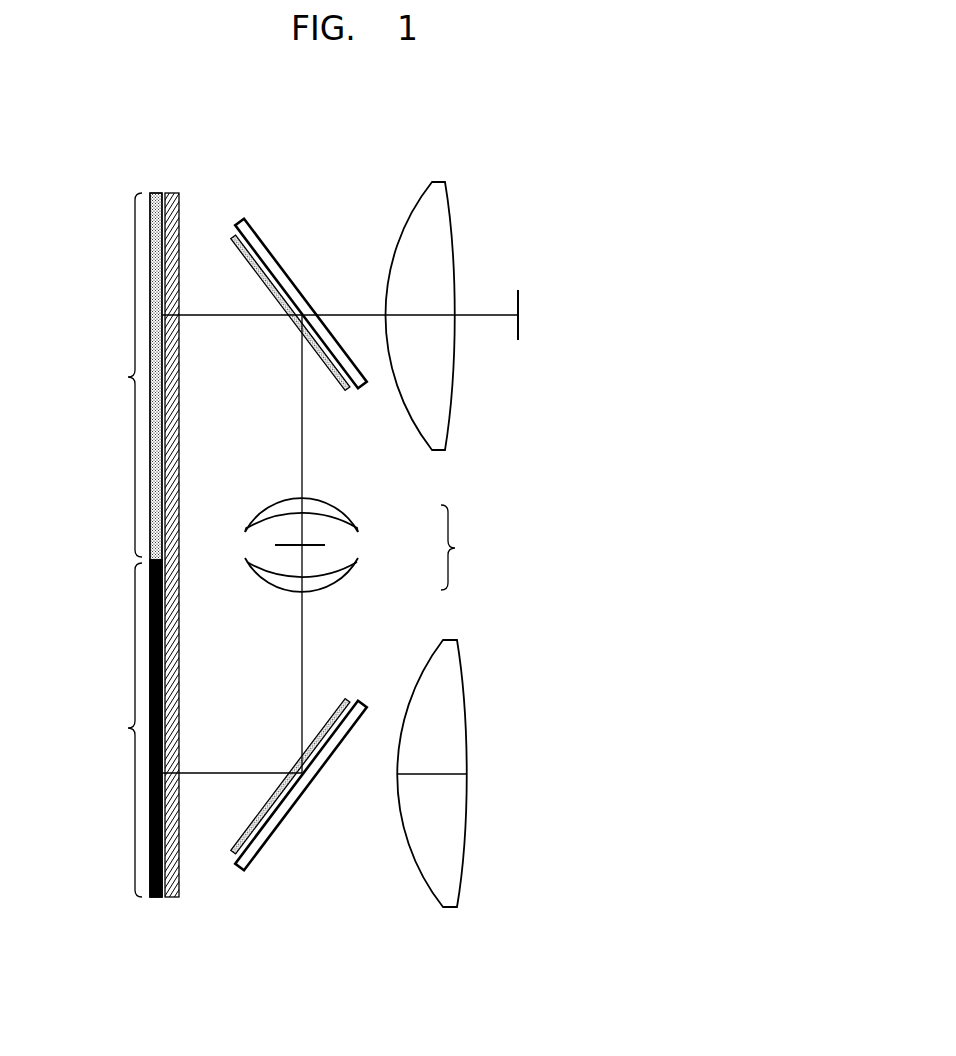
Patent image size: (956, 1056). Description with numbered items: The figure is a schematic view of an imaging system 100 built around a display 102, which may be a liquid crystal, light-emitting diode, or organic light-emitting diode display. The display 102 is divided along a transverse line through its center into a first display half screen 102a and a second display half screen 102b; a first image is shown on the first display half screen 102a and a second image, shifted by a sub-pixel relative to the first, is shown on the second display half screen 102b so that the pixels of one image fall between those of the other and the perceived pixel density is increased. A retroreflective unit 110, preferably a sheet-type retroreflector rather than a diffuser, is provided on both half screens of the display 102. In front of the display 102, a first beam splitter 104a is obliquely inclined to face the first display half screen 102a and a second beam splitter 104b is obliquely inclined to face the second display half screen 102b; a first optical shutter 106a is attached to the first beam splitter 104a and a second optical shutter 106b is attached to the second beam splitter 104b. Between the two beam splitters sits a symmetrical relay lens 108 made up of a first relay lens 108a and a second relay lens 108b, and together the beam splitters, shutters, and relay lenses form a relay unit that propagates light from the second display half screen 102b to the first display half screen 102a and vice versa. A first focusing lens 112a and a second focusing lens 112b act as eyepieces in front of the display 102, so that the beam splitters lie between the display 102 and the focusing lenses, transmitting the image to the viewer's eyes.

The imaging system 100 is at (597, 158).
The display 102 is at (153, 192).
The first display half screen 102a is at (116, 376).
The second display half screen 102b is at (116, 728).
The first beam splitter 104a is at (248, 261).
The second beam splitter 104b is at (242, 836).
The first optical shutter 106a is at (277, 275).
The second optical shutter 106b is at (258, 835).
The relay lens 108 is at (372, 545).
The first relay lens 108a is at (347, 520).
The second relay lens 108b is at (347, 574).
The retroreflective unit 110 is at (180, 192).
The first focusing lens 112a is at (450, 227).
The second focusing lens 112b is at (463, 683).